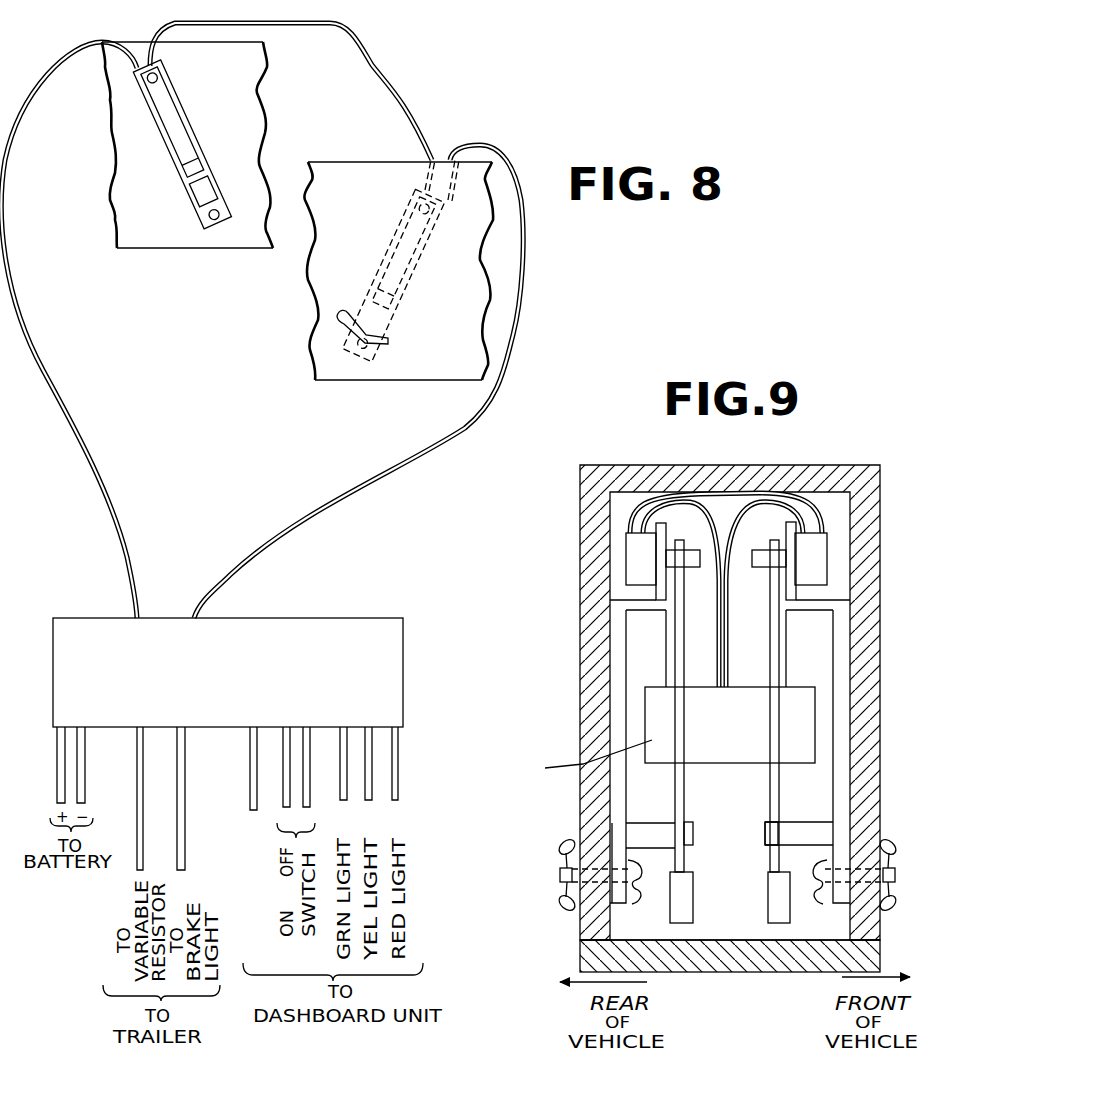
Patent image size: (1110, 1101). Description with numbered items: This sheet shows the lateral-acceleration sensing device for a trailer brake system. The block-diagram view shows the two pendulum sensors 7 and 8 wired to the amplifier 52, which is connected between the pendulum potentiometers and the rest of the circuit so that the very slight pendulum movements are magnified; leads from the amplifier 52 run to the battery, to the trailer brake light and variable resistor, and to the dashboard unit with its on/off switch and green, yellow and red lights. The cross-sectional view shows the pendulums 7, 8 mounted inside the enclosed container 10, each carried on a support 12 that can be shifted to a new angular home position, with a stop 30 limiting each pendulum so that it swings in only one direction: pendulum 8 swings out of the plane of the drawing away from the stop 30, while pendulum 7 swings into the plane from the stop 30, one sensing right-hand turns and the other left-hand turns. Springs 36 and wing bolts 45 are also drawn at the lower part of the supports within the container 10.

In FIG. 8, the pendulum 7 is at (192, 159).
In FIG. 9, the pendulum 7 is at (774, 637).
In FIG. 8, the pendulum 8 is at (395, 279).
In FIG. 9, the pendulum 8 is at (682, 650).
In FIG. 9, the container 10 is at (807, 465).
In FIG. 9, the support 12 is at (628, 662).
In FIG. 9, the stop 30 is at (761, 833).
In FIG. 9, the spring 36 is at (827, 890).
In FIG. 9, the adjusting wing bolt 45 is at (556, 915).
In FIG. 8, the amplifier 52 is at (358, 694).
In FIG. 9, the amplifier 52 is at (626, 734).